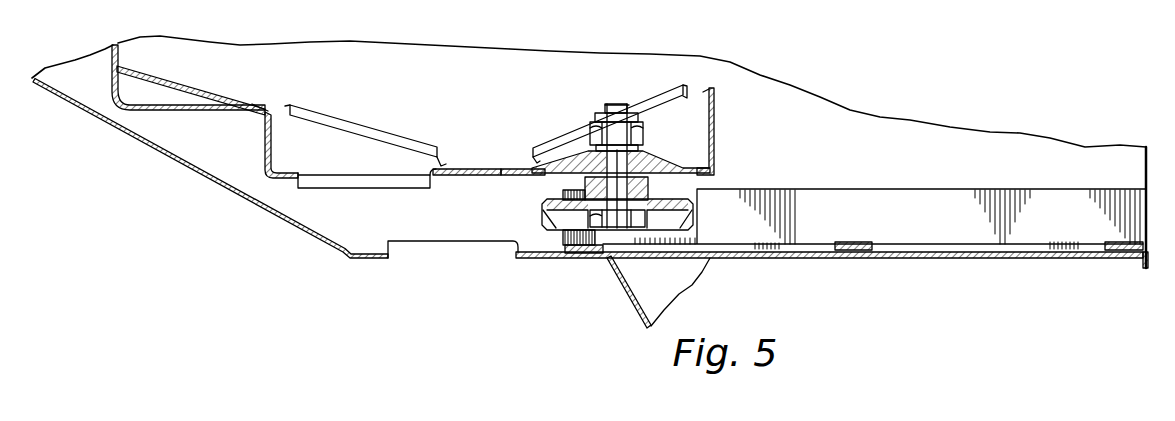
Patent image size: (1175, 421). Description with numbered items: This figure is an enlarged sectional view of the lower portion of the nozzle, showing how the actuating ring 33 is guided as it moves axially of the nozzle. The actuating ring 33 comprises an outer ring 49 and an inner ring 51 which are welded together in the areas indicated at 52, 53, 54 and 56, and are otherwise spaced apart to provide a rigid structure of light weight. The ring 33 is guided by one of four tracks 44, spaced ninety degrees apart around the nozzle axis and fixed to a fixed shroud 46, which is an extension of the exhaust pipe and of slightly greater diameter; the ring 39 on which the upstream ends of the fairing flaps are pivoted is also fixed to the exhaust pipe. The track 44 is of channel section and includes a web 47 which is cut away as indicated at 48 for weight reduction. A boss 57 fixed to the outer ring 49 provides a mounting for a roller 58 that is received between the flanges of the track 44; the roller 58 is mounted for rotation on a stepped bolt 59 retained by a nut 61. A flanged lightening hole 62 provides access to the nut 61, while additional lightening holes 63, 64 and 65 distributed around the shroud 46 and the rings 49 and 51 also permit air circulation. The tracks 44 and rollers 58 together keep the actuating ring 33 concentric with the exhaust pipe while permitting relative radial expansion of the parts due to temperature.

The actuating ring 33 is at (464, 168).
The ring 39 is at (633, 319).
The tracks 44 is at (980, 223).
The fixed shroud 46 is at (327, 250).
The web 47 is at (860, 247).
The cut away 48 is at (762, 243).
The outer ring 49 is at (266, 152).
The inner ring 51 is at (205, 93).
The welded area 52 is at (119, 66).
The welded area 53 is at (258, 106).
The welded area 54 is at (499, 168).
The welded area 56 is at (715, 89).
The boss 57 is at (680, 160).
The roller 58 is at (687, 210).
The stepped bolt 59 is at (590, 218).
The nut 61 is at (600, 118).
The flanged lightening holes 62 is at (657, 103).
The lightening hole 63 is at (445, 248).
The lightening hole 64 is at (363, 180).
The lightening hole 65 is at (376, 140).